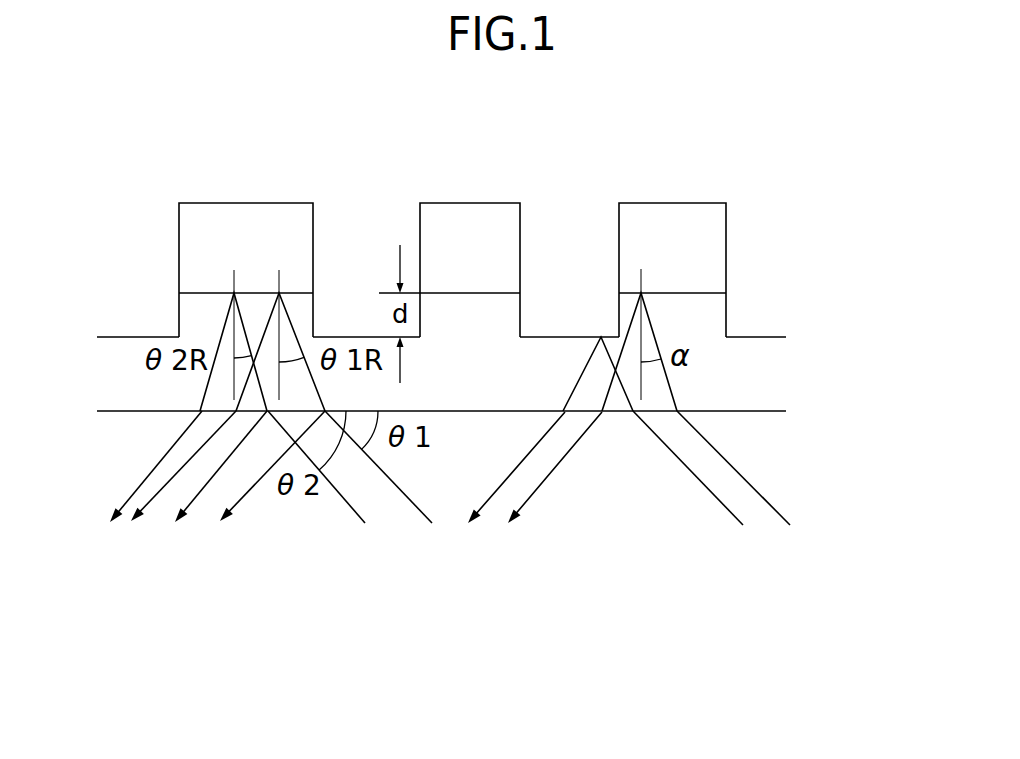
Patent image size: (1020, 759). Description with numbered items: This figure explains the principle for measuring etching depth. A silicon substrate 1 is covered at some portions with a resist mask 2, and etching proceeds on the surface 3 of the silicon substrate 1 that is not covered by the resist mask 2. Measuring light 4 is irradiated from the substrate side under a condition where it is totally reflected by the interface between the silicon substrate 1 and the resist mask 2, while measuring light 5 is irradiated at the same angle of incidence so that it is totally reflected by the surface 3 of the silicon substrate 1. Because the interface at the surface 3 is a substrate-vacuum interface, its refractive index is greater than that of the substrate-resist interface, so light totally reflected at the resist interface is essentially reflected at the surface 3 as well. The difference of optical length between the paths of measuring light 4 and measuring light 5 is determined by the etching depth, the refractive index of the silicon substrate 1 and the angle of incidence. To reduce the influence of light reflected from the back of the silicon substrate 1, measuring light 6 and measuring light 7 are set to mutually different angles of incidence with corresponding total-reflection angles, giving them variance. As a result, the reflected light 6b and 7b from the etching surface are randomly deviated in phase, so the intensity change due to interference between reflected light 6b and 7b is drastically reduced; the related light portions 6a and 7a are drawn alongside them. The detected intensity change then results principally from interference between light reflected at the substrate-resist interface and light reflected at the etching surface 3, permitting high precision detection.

The silicon substrate 1 is at (753, 346).
The resist mask 2 is at (245, 203).
The surface of the silicon substrate 3 is at (566, 337).
The measuring light 4 is at (783, 506).
The measuring light 5 is at (723, 507).
The measuring light 6 is at (417, 505).
The measuring light 7 is at (357, 513).
The diffracted light beam 6a is at (250, 495).
The reflected light 6b is at (155, 503).
The diffracted light beam 7a is at (198, 500).
The reflected light 7b is at (135, 488).